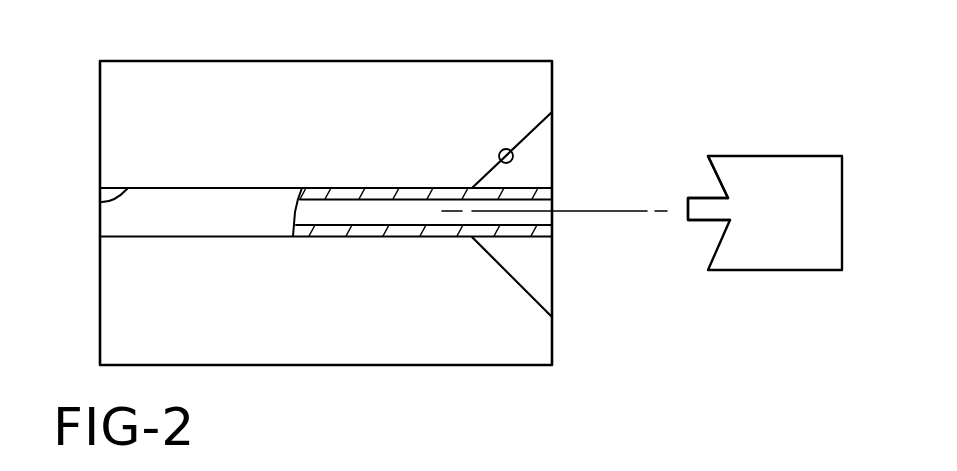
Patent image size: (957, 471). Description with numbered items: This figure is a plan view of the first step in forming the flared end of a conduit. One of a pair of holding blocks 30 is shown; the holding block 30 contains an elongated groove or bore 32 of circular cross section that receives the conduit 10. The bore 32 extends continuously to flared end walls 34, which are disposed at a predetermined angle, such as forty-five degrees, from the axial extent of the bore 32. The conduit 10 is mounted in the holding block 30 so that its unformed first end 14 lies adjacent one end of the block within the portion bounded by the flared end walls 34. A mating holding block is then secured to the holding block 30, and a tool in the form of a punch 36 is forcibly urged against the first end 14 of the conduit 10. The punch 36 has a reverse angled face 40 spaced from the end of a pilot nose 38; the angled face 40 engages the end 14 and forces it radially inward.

The holding block 30 is at (210, 38).
The bore 32 is at (100, 202).
The conduit 10 is at (315, 188).
The flared end walls 34 is at (504, 149).
The first end 14 is at (533, 187).
The punch 36 is at (822, 123).
The pilot nose 38 is at (703, 216).
The reverse angled face 40 is at (716, 178).